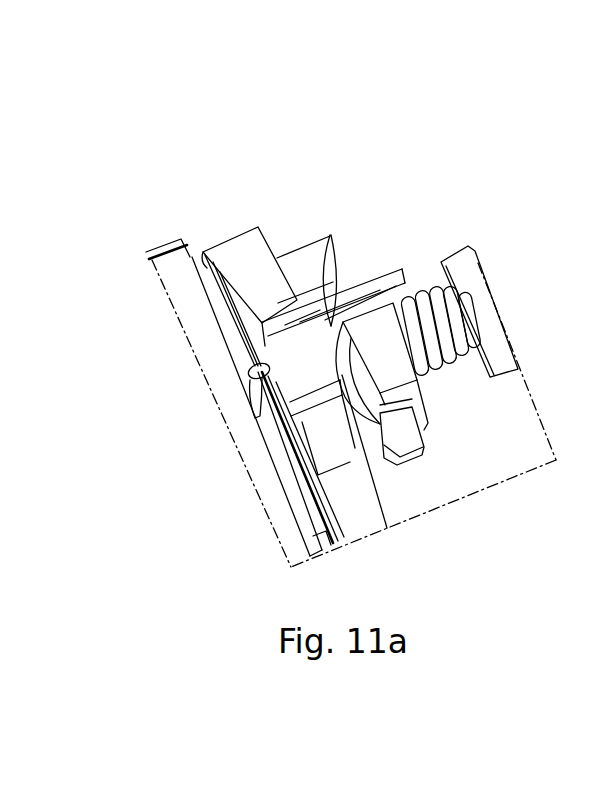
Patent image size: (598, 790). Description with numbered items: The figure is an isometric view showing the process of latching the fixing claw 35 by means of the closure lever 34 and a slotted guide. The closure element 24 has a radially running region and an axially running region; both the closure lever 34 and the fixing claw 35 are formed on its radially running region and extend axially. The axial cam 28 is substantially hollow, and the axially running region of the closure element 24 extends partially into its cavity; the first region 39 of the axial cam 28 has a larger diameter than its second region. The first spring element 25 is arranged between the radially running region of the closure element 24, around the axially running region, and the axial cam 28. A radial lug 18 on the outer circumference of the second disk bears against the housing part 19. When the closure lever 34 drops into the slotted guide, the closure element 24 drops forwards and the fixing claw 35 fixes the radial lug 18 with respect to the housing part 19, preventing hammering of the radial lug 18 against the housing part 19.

The radial lug 18 is at (317, 442).
The housing part 19 is at (328, 328).
The closure element 24 is at (375, 325).
The first spring element 25 is at (417, 305).
The axial cam 28 is at (501, 225).
The first region 39 is at (467, 290).
The closure lever 34 is at (262, 373).
The fixing claw 35 is at (383, 452).